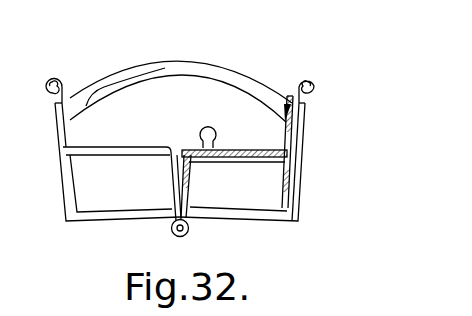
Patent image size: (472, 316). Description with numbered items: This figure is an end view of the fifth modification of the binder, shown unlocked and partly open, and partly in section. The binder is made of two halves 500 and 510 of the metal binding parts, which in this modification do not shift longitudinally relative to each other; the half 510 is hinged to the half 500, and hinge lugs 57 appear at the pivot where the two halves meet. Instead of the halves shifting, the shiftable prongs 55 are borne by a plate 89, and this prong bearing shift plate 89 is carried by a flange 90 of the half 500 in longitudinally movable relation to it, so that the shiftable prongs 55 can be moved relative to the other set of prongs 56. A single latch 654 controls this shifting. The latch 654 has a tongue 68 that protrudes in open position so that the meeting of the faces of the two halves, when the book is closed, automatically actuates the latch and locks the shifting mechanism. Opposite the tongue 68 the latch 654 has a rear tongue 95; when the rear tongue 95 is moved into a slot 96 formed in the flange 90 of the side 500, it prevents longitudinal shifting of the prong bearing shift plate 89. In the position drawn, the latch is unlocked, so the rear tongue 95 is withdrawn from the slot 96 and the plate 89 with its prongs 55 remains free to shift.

The shiftable prongs 55 is at (254, 85).
The prongs 56 is at (73, 106).
The hinge lugs 57 is at (189, 230).
The tongue 68 is at (178, 150).
The plate 89 is at (291, 97).
The flange 90 is at (306, 97).
The rear tongue 95 is at (290, 165).
The slot 96 is at (292, 158).
The half 500 is at (307, 124).
The half 510 is at (130, 156).
The single latch 654 is at (222, 158).